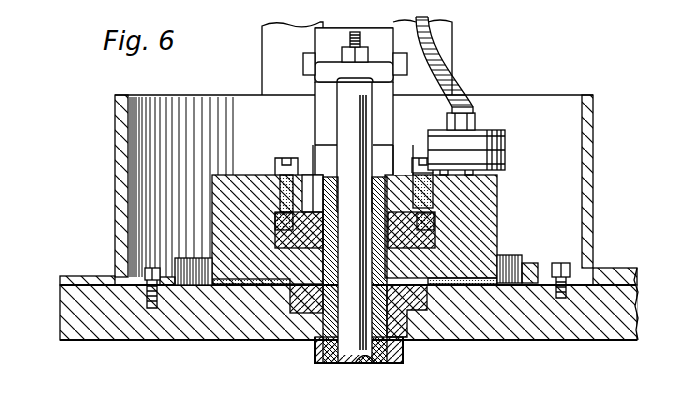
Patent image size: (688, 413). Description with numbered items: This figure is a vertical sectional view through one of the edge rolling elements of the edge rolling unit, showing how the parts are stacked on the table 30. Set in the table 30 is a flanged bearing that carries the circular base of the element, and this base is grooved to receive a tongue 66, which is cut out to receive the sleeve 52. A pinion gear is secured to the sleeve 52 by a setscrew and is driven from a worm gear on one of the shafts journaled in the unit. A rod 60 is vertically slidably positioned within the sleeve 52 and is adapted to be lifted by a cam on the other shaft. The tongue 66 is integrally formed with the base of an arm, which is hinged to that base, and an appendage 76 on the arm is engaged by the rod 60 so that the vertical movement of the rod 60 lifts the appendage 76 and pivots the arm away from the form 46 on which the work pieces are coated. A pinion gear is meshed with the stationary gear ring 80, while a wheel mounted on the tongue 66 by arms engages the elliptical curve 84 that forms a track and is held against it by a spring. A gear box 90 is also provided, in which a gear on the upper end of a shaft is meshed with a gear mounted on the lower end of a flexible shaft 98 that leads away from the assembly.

The table 30 is at (230, 327).
The form 46 is at (487, 213).
The sleeve 52 is at (332, 317).
The rod 60 is at (353, 348).
The tongue 66 is at (407, 228).
The appendage 76 is at (370, 68).
The stationary gear ring 80 is at (513, 255).
The elliptical curve 84 is at (588, 228).
The gear box 90 is at (478, 155).
The flexible shaft 98 is at (457, 72).